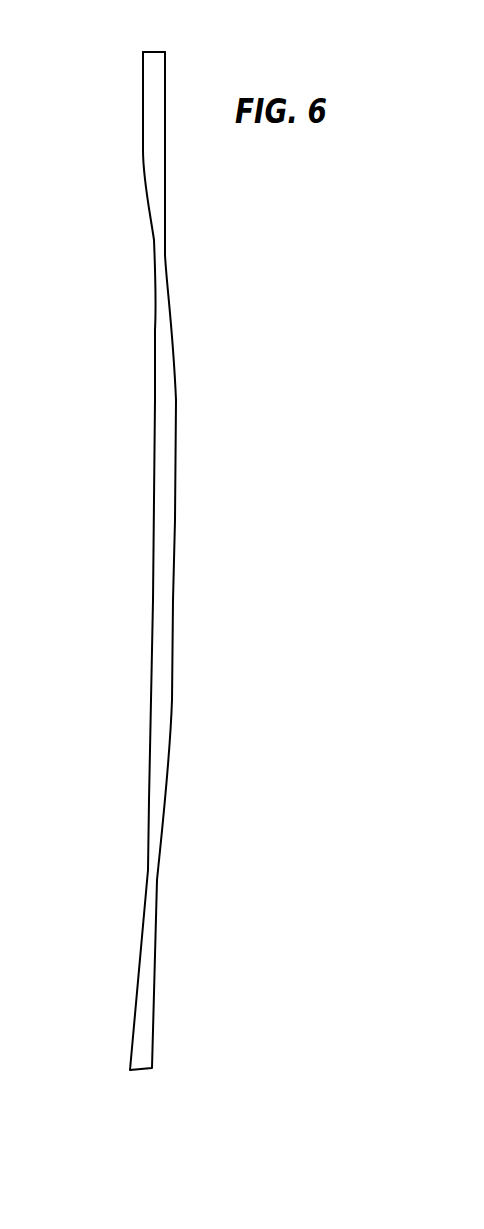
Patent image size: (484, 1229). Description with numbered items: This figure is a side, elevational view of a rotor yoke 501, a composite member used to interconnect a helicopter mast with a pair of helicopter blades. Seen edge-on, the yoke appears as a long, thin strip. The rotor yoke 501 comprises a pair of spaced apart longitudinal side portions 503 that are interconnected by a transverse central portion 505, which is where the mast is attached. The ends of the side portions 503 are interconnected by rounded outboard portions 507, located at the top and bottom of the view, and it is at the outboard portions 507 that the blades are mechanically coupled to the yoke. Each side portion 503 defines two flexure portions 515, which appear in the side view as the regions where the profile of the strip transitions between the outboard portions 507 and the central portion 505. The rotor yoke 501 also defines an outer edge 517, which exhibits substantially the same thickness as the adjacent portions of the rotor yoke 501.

The rotor yoke 501 is at (162, 542).
The longitudinal side portion 503 is at (157, 216).
The transverse central portion 505 is at (165, 523).
The outboard portion 507 is at (155, 73).
The flexure portion 515 is at (164, 283).
The outer edge 517 is at (157, 143).